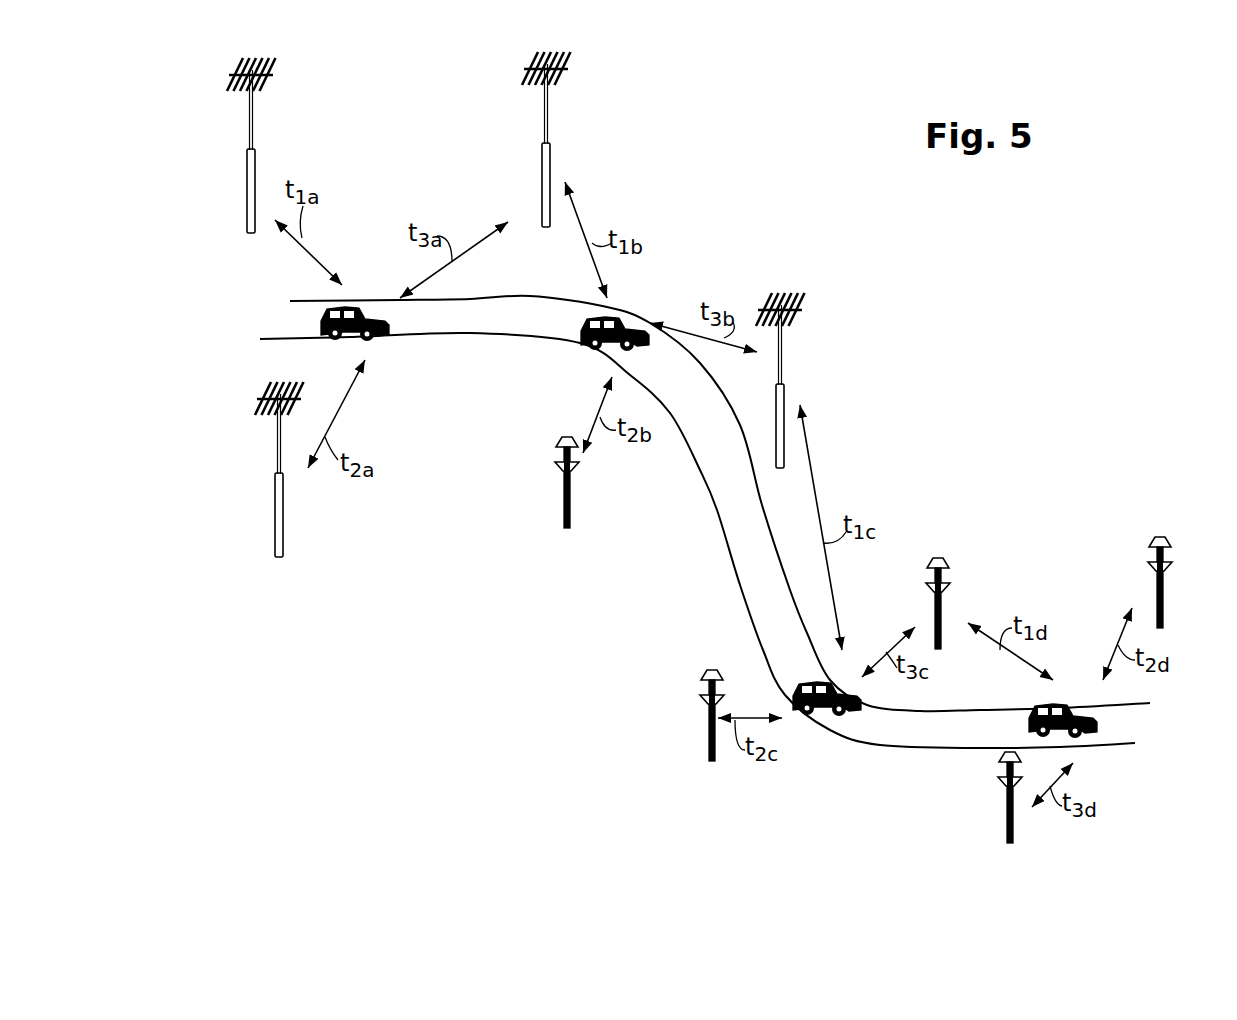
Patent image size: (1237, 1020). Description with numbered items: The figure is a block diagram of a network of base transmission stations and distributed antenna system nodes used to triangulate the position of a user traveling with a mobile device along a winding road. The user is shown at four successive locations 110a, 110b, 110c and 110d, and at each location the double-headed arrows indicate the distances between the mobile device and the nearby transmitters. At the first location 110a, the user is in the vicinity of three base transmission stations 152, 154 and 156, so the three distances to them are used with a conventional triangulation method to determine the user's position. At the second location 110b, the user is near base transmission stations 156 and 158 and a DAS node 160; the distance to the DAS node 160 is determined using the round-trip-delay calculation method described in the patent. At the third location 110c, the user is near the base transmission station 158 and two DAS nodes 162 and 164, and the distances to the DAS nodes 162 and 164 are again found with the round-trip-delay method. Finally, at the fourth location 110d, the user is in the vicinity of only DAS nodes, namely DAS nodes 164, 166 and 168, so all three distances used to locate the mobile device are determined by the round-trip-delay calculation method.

The base transmission station 152 is at (247, 185).
The base transmission station 154 is at (275, 523).
The base transmission station 156 is at (542, 193).
The base transmission station 158 is at (785, 397).
The DAS node 160 is at (564, 510).
The DAS node 162 is at (709, 740).
The DAS node 164 is at (942, 597).
The DAS node 166 is at (1007, 812).
The DAS node 168 is at (1163, 590).
The user location 110a is at (378, 316).
The user location 110b is at (650, 340).
The user location 110c is at (848, 712).
The user location 110d is at (1097, 715).